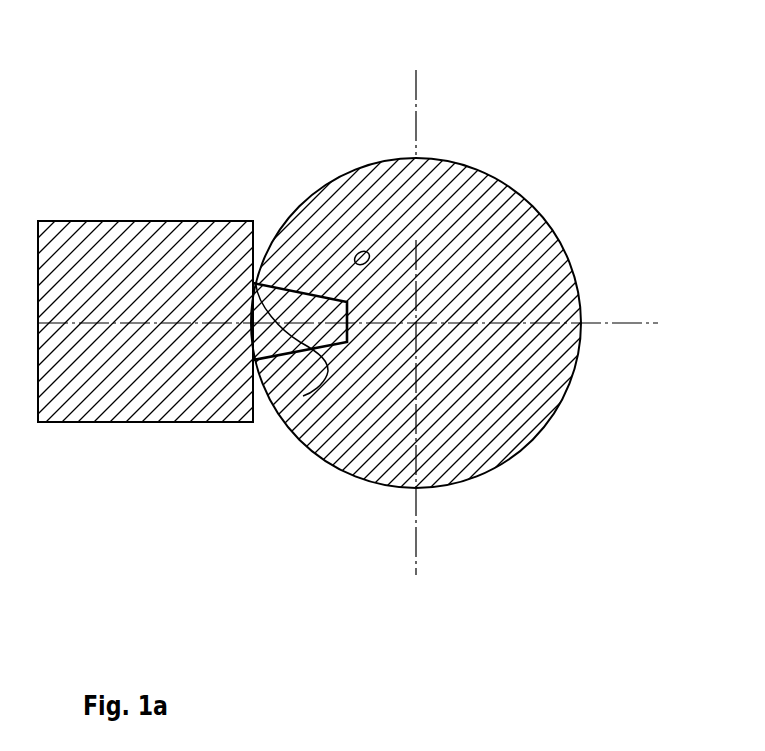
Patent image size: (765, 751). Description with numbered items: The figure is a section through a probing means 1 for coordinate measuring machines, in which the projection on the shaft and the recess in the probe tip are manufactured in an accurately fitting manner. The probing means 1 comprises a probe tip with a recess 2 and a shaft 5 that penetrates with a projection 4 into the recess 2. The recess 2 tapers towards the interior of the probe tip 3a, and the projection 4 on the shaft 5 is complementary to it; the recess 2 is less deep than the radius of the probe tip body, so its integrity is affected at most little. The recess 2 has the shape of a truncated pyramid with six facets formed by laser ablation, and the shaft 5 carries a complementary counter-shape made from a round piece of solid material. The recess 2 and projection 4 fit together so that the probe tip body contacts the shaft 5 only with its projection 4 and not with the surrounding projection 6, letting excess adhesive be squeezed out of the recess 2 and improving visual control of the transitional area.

The probing means 1 is at (590, 86).
The recess 2 is at (290, 412).
The interior of the probe tip 3a is at (372, 252).
The projection 4 is at (287, 255).
The shaft 5 is at (145, 218).
The surrounding projection 6 is at (238, 193).